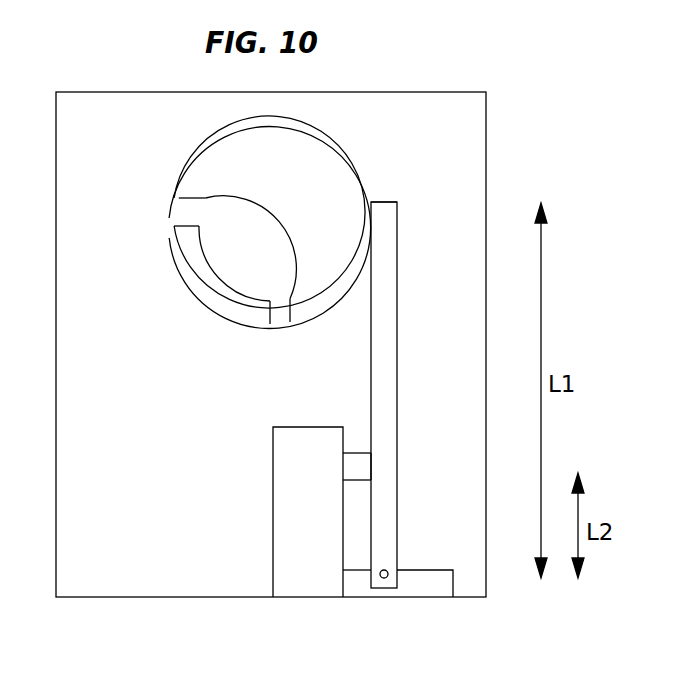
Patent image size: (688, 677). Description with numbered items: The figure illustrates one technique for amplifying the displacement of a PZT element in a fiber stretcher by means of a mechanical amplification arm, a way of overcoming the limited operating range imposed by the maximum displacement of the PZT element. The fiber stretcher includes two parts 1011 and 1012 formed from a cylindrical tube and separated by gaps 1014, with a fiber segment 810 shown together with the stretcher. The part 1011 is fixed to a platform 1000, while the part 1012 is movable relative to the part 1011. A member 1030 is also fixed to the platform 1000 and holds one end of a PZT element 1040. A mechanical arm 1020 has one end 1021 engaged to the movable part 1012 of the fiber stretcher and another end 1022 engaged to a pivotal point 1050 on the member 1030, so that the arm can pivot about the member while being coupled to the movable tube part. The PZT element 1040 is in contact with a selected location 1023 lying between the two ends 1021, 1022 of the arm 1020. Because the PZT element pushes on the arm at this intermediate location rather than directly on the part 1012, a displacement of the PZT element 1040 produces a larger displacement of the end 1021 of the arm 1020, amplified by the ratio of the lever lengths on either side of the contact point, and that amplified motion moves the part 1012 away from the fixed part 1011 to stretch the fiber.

The platform 1000 is at (138, 575).
The part 1011 is at (208, 292).
The part 1012 is at (227, 157).
The gaps 1014 is at (197, 234).
The fiber segment 810 is at (173, 213).
The mechanical arm 1020 is at (397, 337).
The end 1021 is at (397, 220).
The end 1022 is at (369, 581).
The selected location 1023 is at (372, 472).
The member 1030 is at (332, 538).
The PZT element 1040 is at (363, 453).
The pivotal point 1050 is at (390, 571).